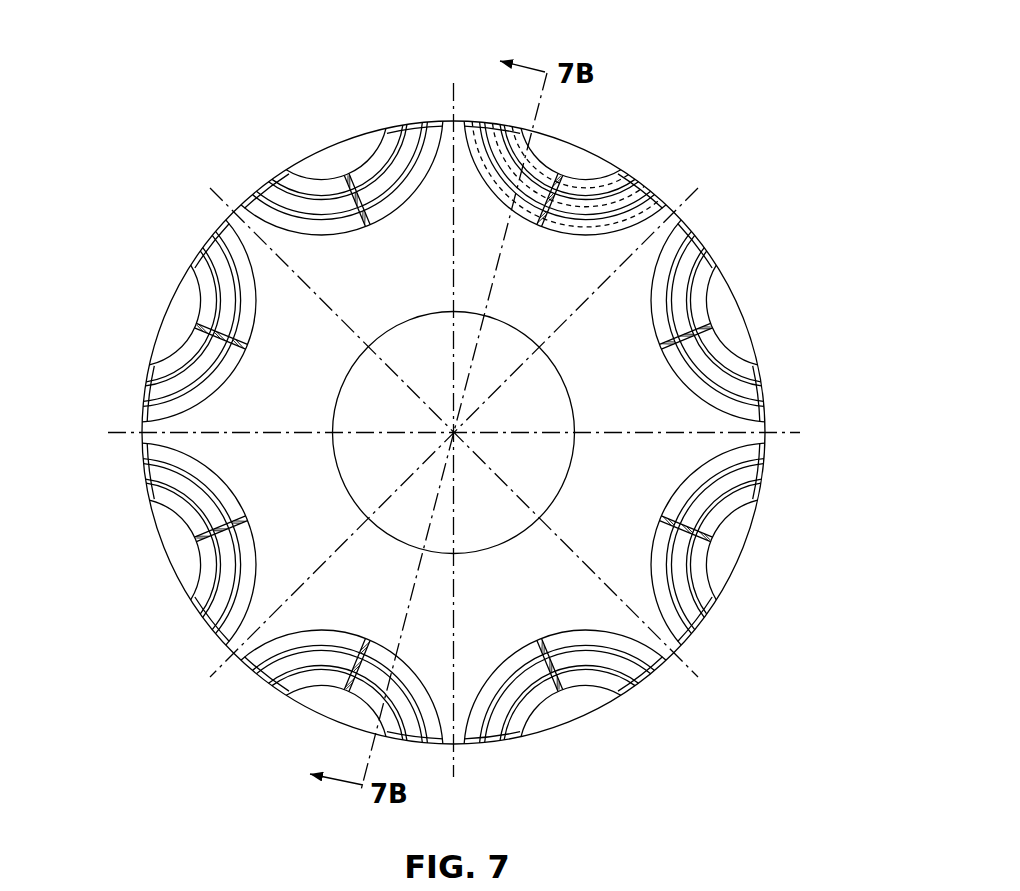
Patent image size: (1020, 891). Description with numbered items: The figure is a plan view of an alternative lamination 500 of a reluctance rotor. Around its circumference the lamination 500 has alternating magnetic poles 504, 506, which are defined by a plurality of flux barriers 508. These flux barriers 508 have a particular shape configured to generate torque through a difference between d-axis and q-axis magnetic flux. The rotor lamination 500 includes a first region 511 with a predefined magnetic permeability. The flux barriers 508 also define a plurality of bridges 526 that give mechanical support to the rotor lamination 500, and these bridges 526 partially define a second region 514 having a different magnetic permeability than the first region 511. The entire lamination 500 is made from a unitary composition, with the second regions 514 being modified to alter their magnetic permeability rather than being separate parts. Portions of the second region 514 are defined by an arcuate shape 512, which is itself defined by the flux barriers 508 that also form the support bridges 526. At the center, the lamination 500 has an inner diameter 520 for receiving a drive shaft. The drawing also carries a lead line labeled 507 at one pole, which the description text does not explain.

The lamination 500 is at (675, 50).
The magnetic pole 504 is at (330, 138).
The magnetic pole 506 is at (579, 137).
The outer wall 507 is at (720, 272).
The flux barrier 508 is at (303, 197).
The first region 511 is at (263, 255).
The arcuate shape 512 is at (568, 238).
The second region 514 is at (517, 133).
The inner diameter 520 is at (653, 408).
The bridge 526 is at (367, 207).